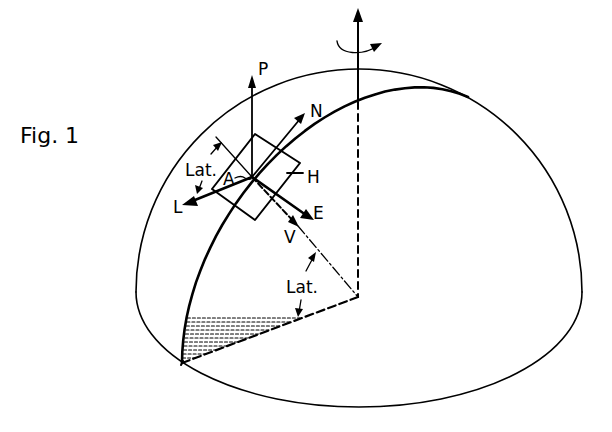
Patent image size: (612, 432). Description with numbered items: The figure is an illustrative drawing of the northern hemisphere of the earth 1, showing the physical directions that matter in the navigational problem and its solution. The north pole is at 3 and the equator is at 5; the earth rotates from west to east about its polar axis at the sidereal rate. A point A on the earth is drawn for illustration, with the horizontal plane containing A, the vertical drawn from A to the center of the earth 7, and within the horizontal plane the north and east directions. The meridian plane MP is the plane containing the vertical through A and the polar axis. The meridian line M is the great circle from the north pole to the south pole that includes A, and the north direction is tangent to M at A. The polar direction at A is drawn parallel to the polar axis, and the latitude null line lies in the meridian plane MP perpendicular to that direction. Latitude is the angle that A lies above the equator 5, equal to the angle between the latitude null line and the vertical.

The earth 1 is at (536, 170).
The north pole 3 is at (360, 101).
The equator 5 is at (160, 347).
The center of sphere 7 is at (363, 297).
The meridian line M is at (196, 284).
The meridian plane MP is at (224, 342).